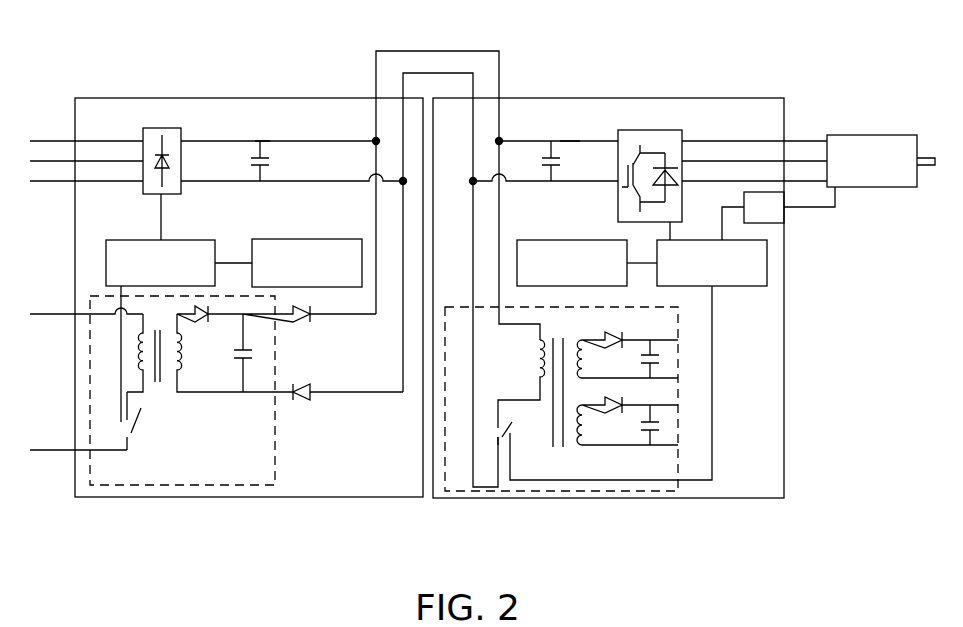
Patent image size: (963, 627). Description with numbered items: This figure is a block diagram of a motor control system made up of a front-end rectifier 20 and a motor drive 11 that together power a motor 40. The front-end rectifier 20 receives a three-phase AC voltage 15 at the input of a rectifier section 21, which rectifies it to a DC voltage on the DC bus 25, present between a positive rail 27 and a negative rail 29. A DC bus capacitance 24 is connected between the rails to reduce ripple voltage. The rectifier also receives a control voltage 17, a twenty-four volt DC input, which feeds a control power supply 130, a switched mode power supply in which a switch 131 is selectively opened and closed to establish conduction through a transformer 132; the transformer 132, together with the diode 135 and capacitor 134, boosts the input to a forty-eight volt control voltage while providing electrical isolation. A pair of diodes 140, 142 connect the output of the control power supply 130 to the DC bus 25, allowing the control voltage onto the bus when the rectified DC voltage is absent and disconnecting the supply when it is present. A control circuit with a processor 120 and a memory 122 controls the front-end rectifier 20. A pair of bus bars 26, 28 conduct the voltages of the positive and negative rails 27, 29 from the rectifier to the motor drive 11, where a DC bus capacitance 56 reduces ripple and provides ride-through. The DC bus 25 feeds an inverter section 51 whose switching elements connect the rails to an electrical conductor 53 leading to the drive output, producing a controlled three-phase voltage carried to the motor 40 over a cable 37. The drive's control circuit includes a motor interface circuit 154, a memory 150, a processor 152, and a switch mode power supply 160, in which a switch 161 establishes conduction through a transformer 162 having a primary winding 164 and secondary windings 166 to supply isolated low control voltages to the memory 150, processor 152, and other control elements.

The motor drive 11 is at (630, 98).
The three-phase AC voltage 15 is at (50, 135).
The control voltage 17 is at (56, 306).
The front-end rectifier 20 is at (270, 97).
The rectifier section 21 is at (168, 128).
The DC bus capacitance 24 is at (272, 171).
The DC bus 25 is at (256, 132).
The bus bar 26 is at (420, 51).
The positive rail 27 is at (198, 141).
The bus bar 28 is at (473, 84).
The negative rail 29 is at (187, 181).
The cable 37 is at (811, 131).
The motor 40 is at (887, 172).
The inverter section 51 is at (645, 130).
The electrical conductor 53 is at (715, 134).
The DC bus capacitance 56 is at (564, 163).
The processor 120 is at (175, 240).
The memory 122 is at (302, 239).
The control power supply 130 is at (280, 450).
The switch 131 is at (137, 434).
The transformer 132 is at (162, 395).
The capacitor 134 is at (233, 365).
The diode 135 is at (217, 325).
The diode 140 is at (302, 330).
The diode 142 is at (305, 378).
The memory 150 is at (588, 240).
The processor 152 is at (770, 263).
The motor interface circuit 154 is at (766, 210).
The switch mode power supply 160 is at (680, 392).
The switch 161 is at (495, 428).
The transformer 162 is at (556, 463).
The primary winding 164 is at (533, 342).
The secondary winding 166 is at (594, 348).